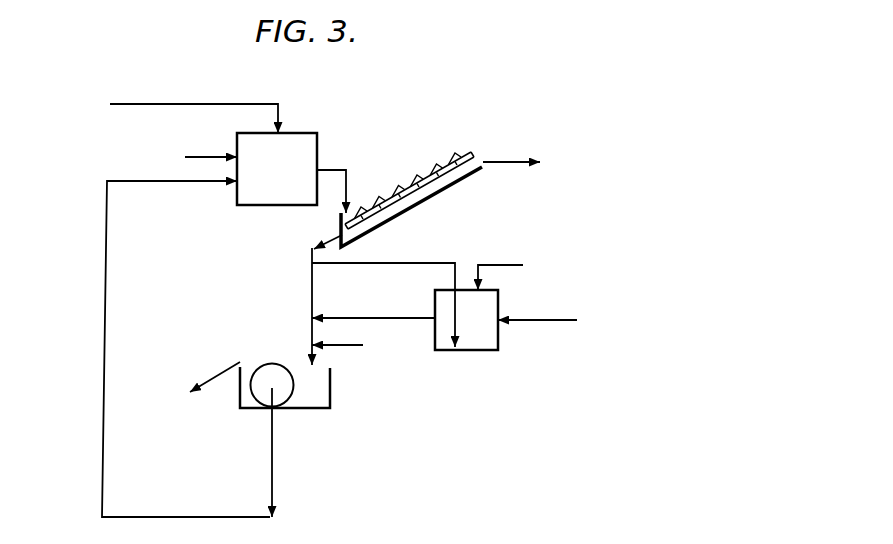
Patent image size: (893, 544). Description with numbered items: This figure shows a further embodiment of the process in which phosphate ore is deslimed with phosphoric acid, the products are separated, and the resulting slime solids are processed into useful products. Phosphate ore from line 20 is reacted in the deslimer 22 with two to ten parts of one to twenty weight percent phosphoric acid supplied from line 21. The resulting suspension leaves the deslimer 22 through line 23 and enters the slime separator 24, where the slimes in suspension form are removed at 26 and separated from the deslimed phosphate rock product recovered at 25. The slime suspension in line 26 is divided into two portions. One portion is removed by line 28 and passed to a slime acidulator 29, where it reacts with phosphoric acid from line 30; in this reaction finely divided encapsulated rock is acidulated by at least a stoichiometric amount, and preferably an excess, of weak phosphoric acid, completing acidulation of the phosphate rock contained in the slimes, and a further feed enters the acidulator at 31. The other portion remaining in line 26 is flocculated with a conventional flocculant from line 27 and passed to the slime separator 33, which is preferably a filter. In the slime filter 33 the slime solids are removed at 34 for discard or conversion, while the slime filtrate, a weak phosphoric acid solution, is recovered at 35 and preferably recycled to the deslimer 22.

The phosphate ore line 20 is at (281, 107).
The phosphoric acid line 21 is at (213, 153).
The deslimer 22 is at (266, 161).
The deslimer discharge line 23 is at (333, 167).
The slime separator 24 is at (484, 181).
The deslimed phosphate rock product outlet 25 is at (511, 163).
The slime suspension line 26 is at (312, 261).
The flocculant line 27 is at (352, 346).
The slime portion line 28 is at (413, 267).
The slime acidulator 29 is at (483, 323).
The phosphoric acid line 30 is at (522, 245).
The acid feed line to slime acidulator 31 is at (538, 325).
The slime separator 33 is at (250, 418).
The slime solids outlet 34 is at (213, 375).
The slime filtrate outlet 35 is at (102, 491).